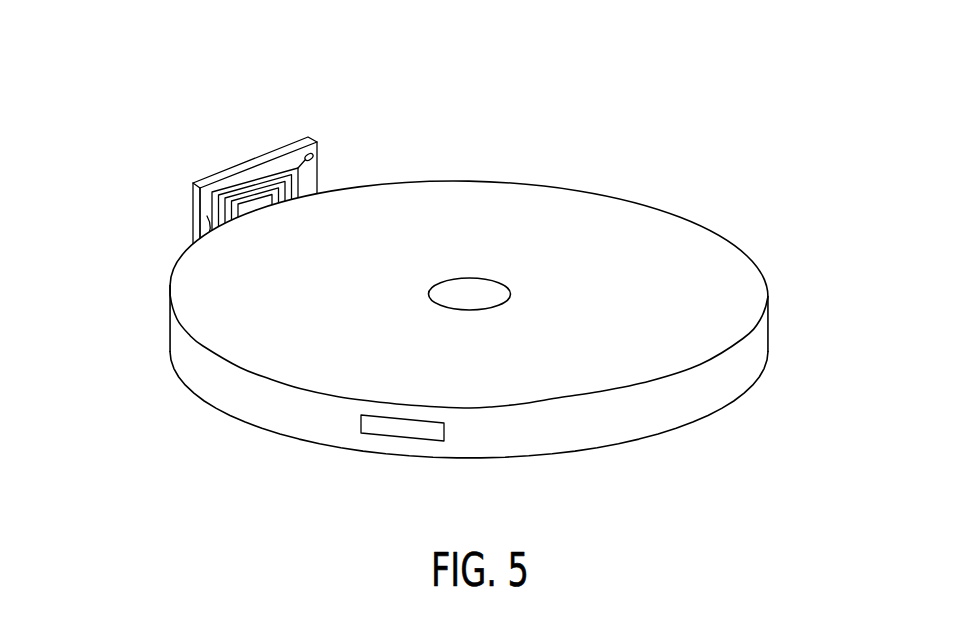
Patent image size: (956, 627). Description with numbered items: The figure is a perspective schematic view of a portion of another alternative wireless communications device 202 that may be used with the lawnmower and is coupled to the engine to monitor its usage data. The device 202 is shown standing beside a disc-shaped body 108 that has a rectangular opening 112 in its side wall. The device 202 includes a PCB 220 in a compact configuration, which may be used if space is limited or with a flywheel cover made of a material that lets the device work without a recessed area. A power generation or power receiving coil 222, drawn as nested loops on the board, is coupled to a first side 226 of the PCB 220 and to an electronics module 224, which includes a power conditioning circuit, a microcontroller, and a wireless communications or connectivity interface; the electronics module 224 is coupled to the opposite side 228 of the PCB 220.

The disc-shaped body 108 is at (705, 242).
The slot 112 is at (405, 432).
The wireless communications device 202 is at (318, 172).
The PCB 220 is at (199, 221).
The power generation or power receiving coil 222 is at (243, 197).
The electronics module 224 is at (256, 155).
The first side 226 is at (206, 237).
The opposite side 228 is at (192, 192).